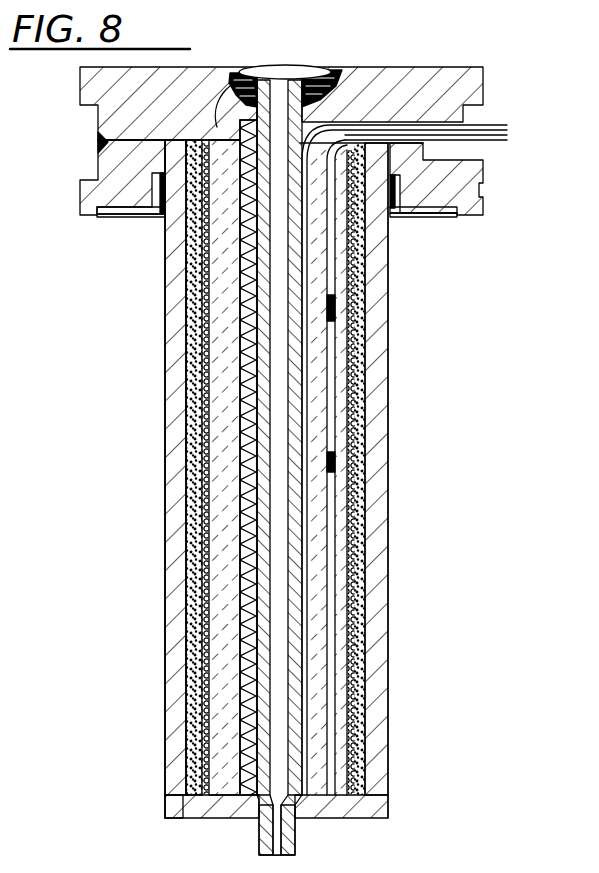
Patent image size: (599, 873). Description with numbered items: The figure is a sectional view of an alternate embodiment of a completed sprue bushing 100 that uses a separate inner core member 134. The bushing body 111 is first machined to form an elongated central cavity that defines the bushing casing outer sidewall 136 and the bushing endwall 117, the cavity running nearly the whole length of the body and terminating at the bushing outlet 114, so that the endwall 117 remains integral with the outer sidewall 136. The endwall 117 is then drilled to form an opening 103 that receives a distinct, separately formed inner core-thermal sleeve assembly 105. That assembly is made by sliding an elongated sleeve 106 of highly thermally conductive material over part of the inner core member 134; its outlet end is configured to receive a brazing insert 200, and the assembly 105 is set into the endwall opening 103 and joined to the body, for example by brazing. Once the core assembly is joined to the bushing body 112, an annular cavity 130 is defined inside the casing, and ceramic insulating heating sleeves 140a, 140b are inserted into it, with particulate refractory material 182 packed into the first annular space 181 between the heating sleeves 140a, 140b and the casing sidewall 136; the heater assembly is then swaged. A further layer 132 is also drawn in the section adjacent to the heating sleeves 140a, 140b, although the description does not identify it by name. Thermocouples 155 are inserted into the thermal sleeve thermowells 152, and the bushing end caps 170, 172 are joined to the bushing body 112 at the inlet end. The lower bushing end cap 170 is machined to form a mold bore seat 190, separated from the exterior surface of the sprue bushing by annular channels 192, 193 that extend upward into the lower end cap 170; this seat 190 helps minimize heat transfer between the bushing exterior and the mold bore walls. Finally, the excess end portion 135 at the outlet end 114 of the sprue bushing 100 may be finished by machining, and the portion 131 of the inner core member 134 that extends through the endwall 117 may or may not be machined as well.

The sprue bushing 100 is at (152, 354).
The opening 103 is at (258, 820).
The inner core-thermal sleeve assembly 105 is at (238, 640).
The elongated sleeve 106 is at (232, 70).
The bushing body 111 is at (163, 325).
The bushing body 112 is at (388, 512).
The bushing outlet 114 is at (262, 850).
The bushing endwall 117 is at (360, 814).
The annular cavity 130 is at (185, 268).
The portion of the inner core member 131 is at (205, 805).
The separator layer 132 is at (250, 390).
The inner core member 134 is at (250, 425).
The excess end portion 135 is at (210, 815).
The bushing casing outer sidewall 136 is at (165, 495).
The ceramic insulating heating sleeve 140a is at (350, 333).
The ceramic insulating heating sleeve 140b is at (328, 600).
The thermal sleeve thermowells 152 is at (305, 297).
The thermocouples 155 is at (502, 128).
The lower bushing end cap 170 is at (80, 184).
The bushing end cap 172 is at (80, 92).
The first annular space 181 is at (362, 427).
The particulate refractory material 182 is at (365, 380).
The mold bore seat 190 is at (484, 214).
The annular channel 192 is at (125, 216).
The annular channel 193 is at (160, 186).
The brazing insert 200 is at (293, 806).